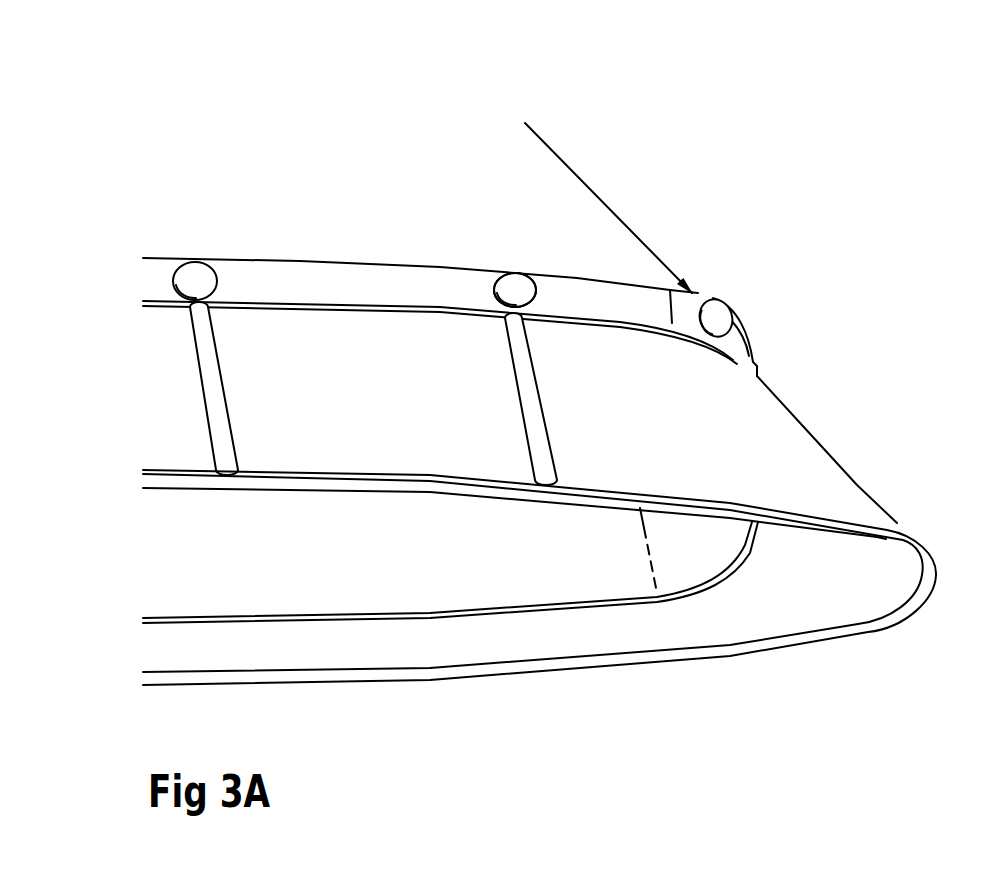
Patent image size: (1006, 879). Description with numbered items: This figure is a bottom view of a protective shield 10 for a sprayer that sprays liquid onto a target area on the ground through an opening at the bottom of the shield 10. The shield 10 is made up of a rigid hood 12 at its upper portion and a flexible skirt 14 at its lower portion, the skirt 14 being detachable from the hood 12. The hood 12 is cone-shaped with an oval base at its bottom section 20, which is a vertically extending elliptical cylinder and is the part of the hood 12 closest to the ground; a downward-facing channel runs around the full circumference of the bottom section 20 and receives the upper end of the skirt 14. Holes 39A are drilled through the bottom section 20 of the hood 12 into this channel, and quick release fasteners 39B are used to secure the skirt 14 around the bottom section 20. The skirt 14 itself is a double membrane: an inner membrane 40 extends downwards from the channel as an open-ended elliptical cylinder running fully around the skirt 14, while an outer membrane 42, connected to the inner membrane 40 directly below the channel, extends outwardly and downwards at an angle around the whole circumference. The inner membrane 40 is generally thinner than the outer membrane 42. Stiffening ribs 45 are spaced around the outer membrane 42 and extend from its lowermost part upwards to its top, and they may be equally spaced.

The shield 10 is at (858, 195).
The hood 12 is at (550, 177).
The skirt 14 is at (278, 325).
The bottom section 20 is at (697, 302).
The holes 39A is at (508, 283).
The quick release fasteners 39B is at (538, 290).
The inner membrane 40 is at (692, 562).
The outer membrane 42 is at (822, 493).
The stiffening ribs 45 is at (533, 410).